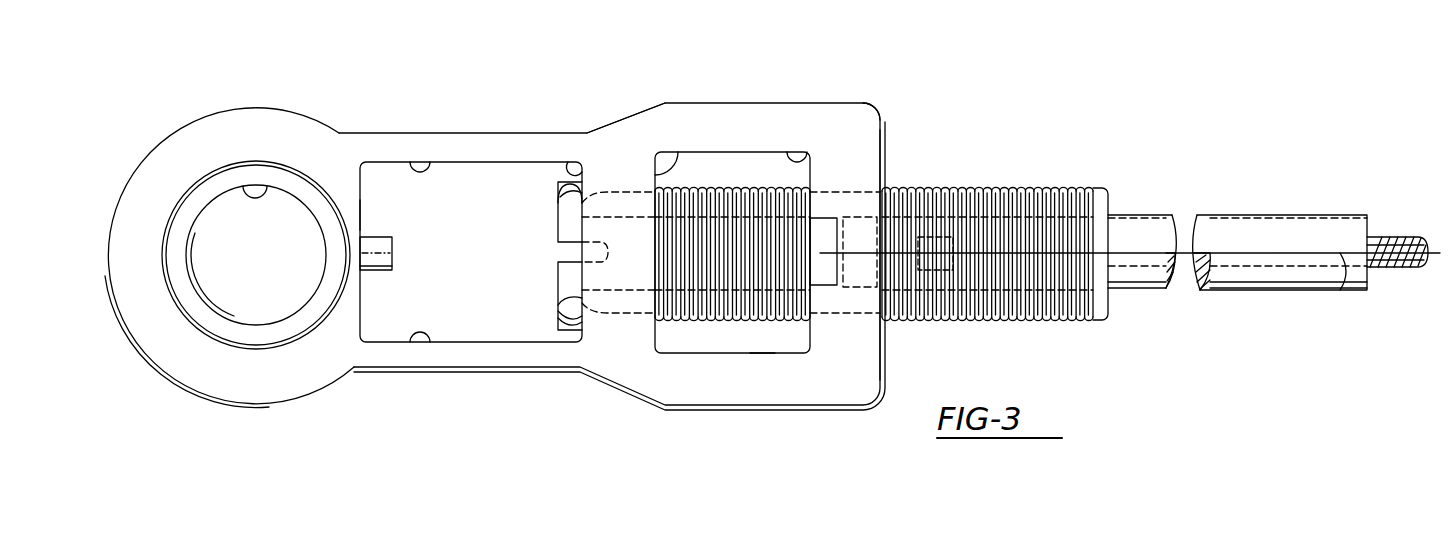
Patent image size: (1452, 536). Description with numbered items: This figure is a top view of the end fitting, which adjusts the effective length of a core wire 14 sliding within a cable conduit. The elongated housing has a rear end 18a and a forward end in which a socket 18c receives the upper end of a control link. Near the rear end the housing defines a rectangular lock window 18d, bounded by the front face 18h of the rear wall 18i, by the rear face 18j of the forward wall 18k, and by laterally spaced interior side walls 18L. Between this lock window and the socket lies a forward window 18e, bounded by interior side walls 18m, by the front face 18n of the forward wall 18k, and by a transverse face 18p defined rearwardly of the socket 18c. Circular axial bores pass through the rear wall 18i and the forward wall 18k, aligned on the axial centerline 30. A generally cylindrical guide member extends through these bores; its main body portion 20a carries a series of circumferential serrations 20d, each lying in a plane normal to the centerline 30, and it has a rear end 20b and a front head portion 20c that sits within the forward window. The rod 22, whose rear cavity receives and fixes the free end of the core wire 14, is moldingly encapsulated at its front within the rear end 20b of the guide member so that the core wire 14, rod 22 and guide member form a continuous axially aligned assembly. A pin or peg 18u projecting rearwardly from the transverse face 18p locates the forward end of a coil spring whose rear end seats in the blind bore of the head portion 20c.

The core wire 14 is at (1377, 236).
The rear end 18a is at (883, 179).
The socket 18c is at (238, 186).
The lock window 18d is at (762, 184).
The forward window 18e is at (506, 176).
The front face 18h is at (812, 197).
The rear wall 18i is at (860, 112).
The rear face 18j is at (662, 172).
The forward wall 18k is at (638, 158).
The interior side walls 18L is at (805, 192).
The interior side walls 18m is at (418, 163).
The front face 18n is at (574, 164).
The transverse face 18p is at (360, 212).
The pin or peg 18u is at (385, 267).
The main body portion 20a is at (1100, 176).
The rear end 20b is at (1108, 307).
The front head portion 20c is at (554, 322).
The serrations 20d is at (1043, 187).
The rod 22 is at (1293, 222).
The axial centerline 30 is at (1343, 292).